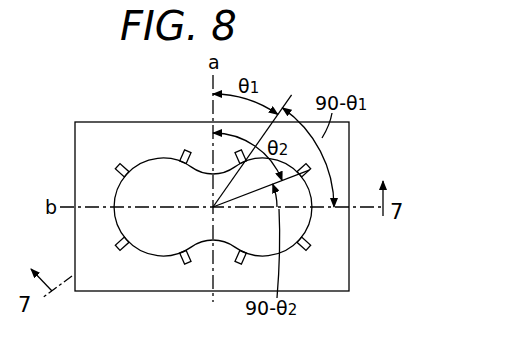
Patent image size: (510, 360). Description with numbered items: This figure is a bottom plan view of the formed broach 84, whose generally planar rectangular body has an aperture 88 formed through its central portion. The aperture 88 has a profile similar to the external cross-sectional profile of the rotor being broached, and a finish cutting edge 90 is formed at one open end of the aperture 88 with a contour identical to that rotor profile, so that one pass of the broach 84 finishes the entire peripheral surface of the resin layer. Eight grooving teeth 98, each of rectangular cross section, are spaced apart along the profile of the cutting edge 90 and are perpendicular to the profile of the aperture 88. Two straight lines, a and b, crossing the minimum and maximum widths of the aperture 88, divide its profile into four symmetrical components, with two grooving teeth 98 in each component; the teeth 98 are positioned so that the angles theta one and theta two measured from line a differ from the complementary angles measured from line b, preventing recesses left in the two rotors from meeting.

The formed broach 84 is at (322, 282).
The aperture 88 is at (298, 222).
The cutting edge 90 is at (119, 224).
The grooving teeth 98 is at (118, 163).